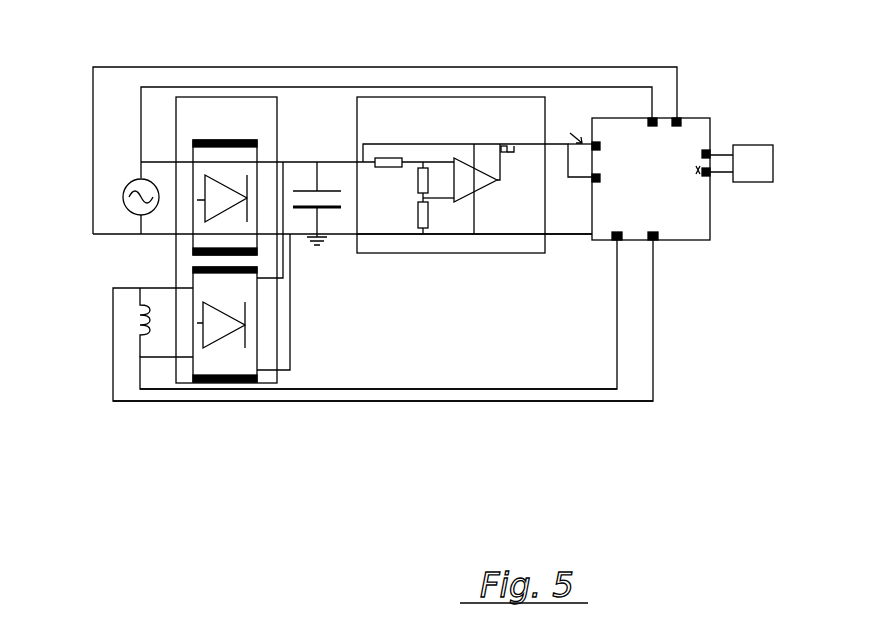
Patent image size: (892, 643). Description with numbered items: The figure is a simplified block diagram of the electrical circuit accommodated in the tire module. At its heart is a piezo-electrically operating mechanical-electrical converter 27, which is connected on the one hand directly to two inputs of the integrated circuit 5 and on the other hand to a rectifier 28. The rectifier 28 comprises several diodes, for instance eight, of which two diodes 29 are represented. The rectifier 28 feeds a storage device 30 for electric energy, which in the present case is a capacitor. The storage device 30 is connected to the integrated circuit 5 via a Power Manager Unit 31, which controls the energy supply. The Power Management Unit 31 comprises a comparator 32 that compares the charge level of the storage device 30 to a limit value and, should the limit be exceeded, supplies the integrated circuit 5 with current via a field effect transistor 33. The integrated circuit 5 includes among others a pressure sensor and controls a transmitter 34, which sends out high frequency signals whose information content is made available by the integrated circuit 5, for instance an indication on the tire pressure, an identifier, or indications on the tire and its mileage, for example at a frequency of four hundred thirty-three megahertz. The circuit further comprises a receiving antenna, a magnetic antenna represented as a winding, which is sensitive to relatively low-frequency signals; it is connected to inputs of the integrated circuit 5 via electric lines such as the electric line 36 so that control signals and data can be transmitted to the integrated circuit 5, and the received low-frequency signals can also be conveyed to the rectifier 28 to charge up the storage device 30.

The integrated circuit 5 is at (673, 190).
The mechanical-electrical converter 27 is at (133, 207).
The rectifier 28 is at (233, 97).
The diodes 29 is at (208, 205).
The storage device 30 is at (325, 208).
The Power Manager Unit 31 is at (475, 175).
The comparator 32 is at (472, 178).
The field effect transistor 33 is at (513, 133).
The transmitter 34 is at (760, 163).
The electric line 36 is at (469, 390).